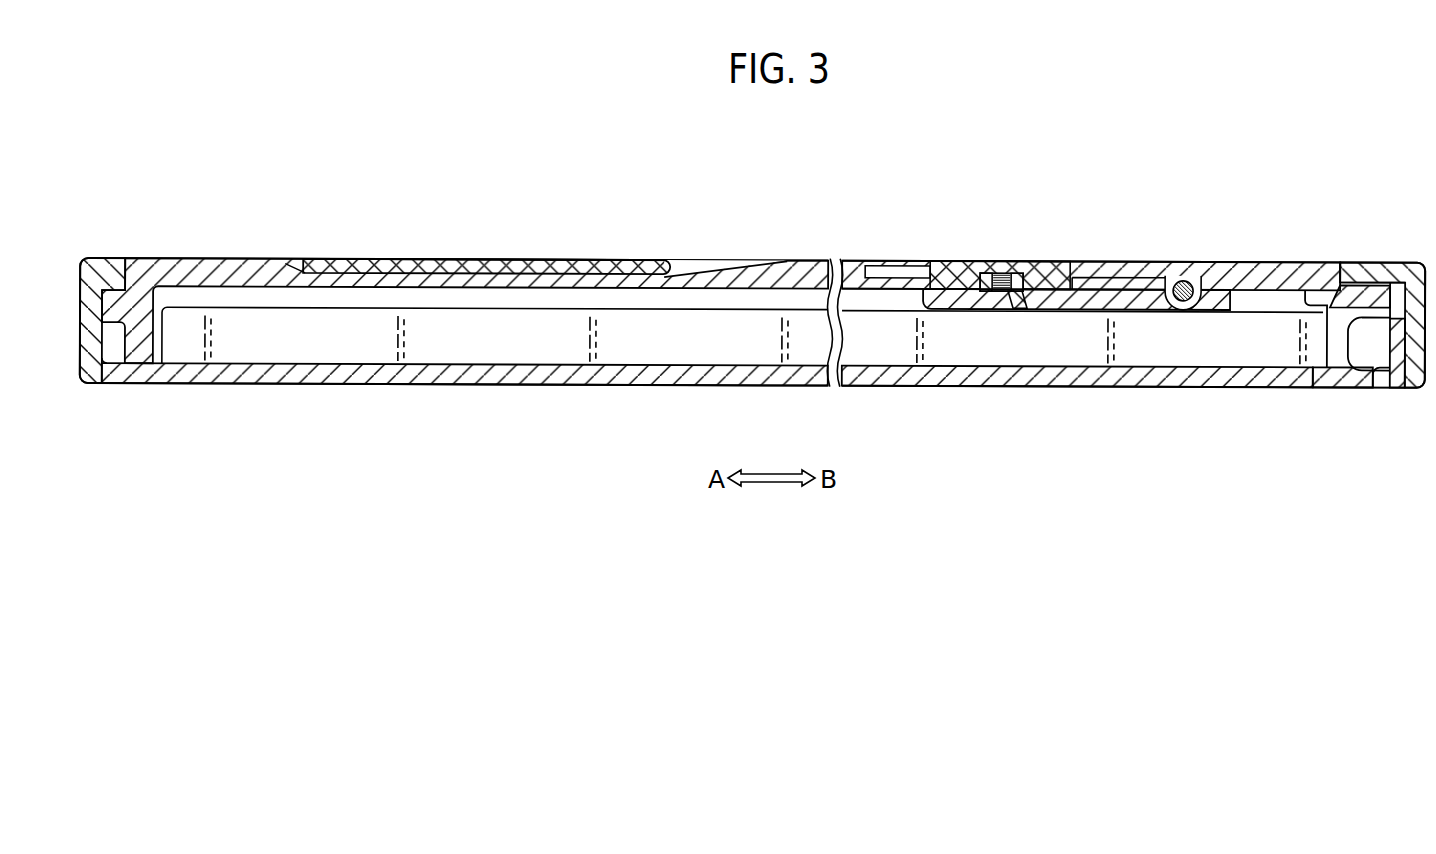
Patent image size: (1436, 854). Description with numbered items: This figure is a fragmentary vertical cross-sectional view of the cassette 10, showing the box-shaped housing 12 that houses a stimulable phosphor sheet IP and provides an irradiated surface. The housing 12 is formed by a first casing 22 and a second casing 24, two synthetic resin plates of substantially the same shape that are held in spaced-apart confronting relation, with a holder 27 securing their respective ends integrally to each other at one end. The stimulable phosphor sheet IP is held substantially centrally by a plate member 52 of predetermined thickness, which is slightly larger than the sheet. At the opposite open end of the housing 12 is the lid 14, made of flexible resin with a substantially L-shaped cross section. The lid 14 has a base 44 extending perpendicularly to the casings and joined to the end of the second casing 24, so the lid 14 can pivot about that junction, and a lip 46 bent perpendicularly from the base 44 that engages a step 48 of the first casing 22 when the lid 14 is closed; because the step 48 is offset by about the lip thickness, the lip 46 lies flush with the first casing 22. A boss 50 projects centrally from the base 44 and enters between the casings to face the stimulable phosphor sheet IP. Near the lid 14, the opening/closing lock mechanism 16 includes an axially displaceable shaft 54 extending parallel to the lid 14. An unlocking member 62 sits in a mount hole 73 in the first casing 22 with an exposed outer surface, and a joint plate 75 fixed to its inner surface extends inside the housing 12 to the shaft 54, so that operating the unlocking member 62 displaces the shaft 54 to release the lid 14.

The cassette 10 is at (921, 136).
The housing 12 is at (253, 383).
The lid 14 is at (1408, 277).
The opening/closing lock mechanism 16 is at (1036, 313).
The first casing 22 is at (160, 272).
The second casing 24 is at (452, 372).
The holder 27 is at (88, 347).
The base 44 is at (1410, 377).
The lip 46 is at (1368, 272).
The step 48 is at (1323, 367).
The boss 50 is at (1367, 350).
The plate member 52 is at (670, 347).
The shaft 54 is at (1183, 278).
The unlocking member 62 is at (942, 268).
The mount hole 73 is at (905, 262).
The joint plate 75 is at (1157, 305).
The stimulable phosphor sheet IP is at (333, 325).